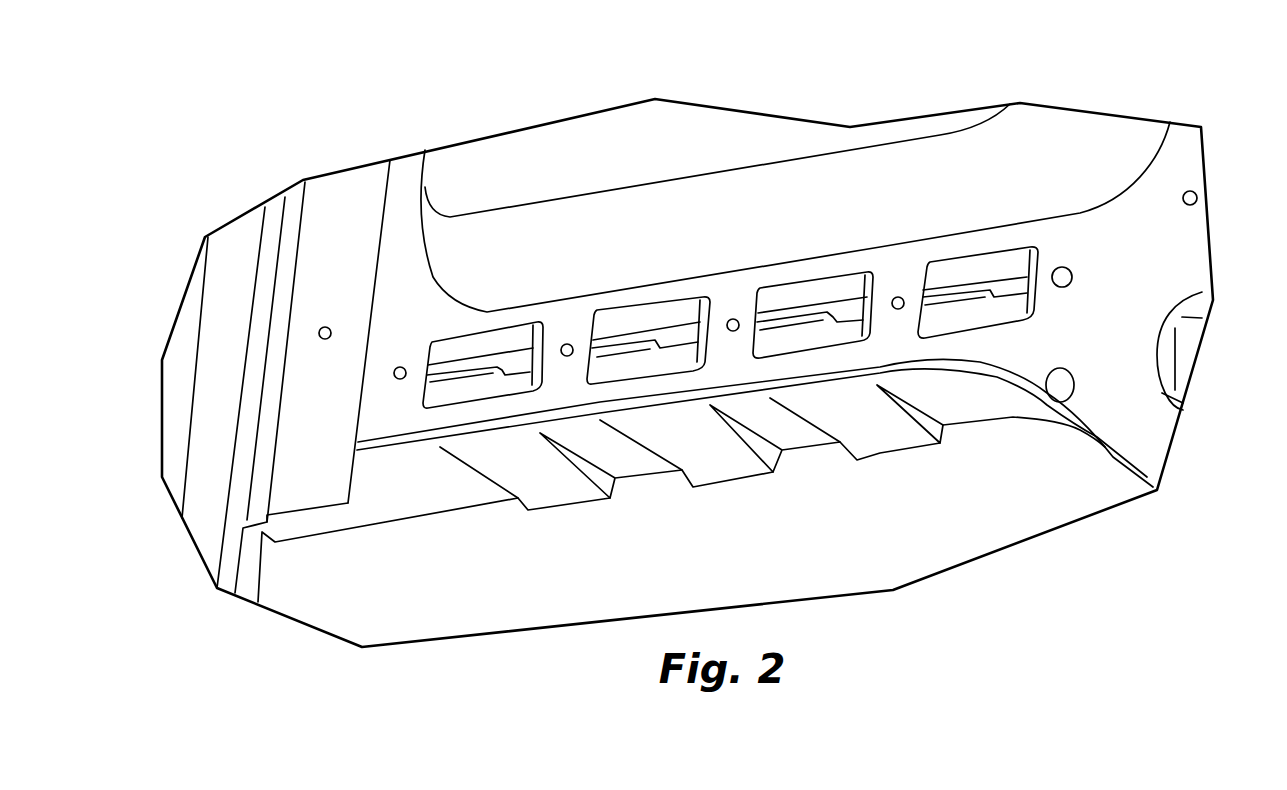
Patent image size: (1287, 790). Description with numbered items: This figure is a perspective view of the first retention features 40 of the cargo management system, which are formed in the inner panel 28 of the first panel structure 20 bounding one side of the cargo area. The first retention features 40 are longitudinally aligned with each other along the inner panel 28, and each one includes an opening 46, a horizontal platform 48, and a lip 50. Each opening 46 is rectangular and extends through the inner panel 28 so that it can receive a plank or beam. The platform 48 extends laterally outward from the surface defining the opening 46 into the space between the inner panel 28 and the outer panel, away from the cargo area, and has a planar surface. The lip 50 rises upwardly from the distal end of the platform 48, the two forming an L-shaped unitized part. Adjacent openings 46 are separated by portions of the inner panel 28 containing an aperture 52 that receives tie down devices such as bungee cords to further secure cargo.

The first panel structure 20 is at (443, 320).
The inner panel 28 is at (1150, 303).
The first retention features 40 is at (687, 292).
The opening 46 is at (615, 343).
The horizontal platform 48 is at (670, 357).
The lip 50 is at (648, 347).
The aperture 52 is at (733, 313).